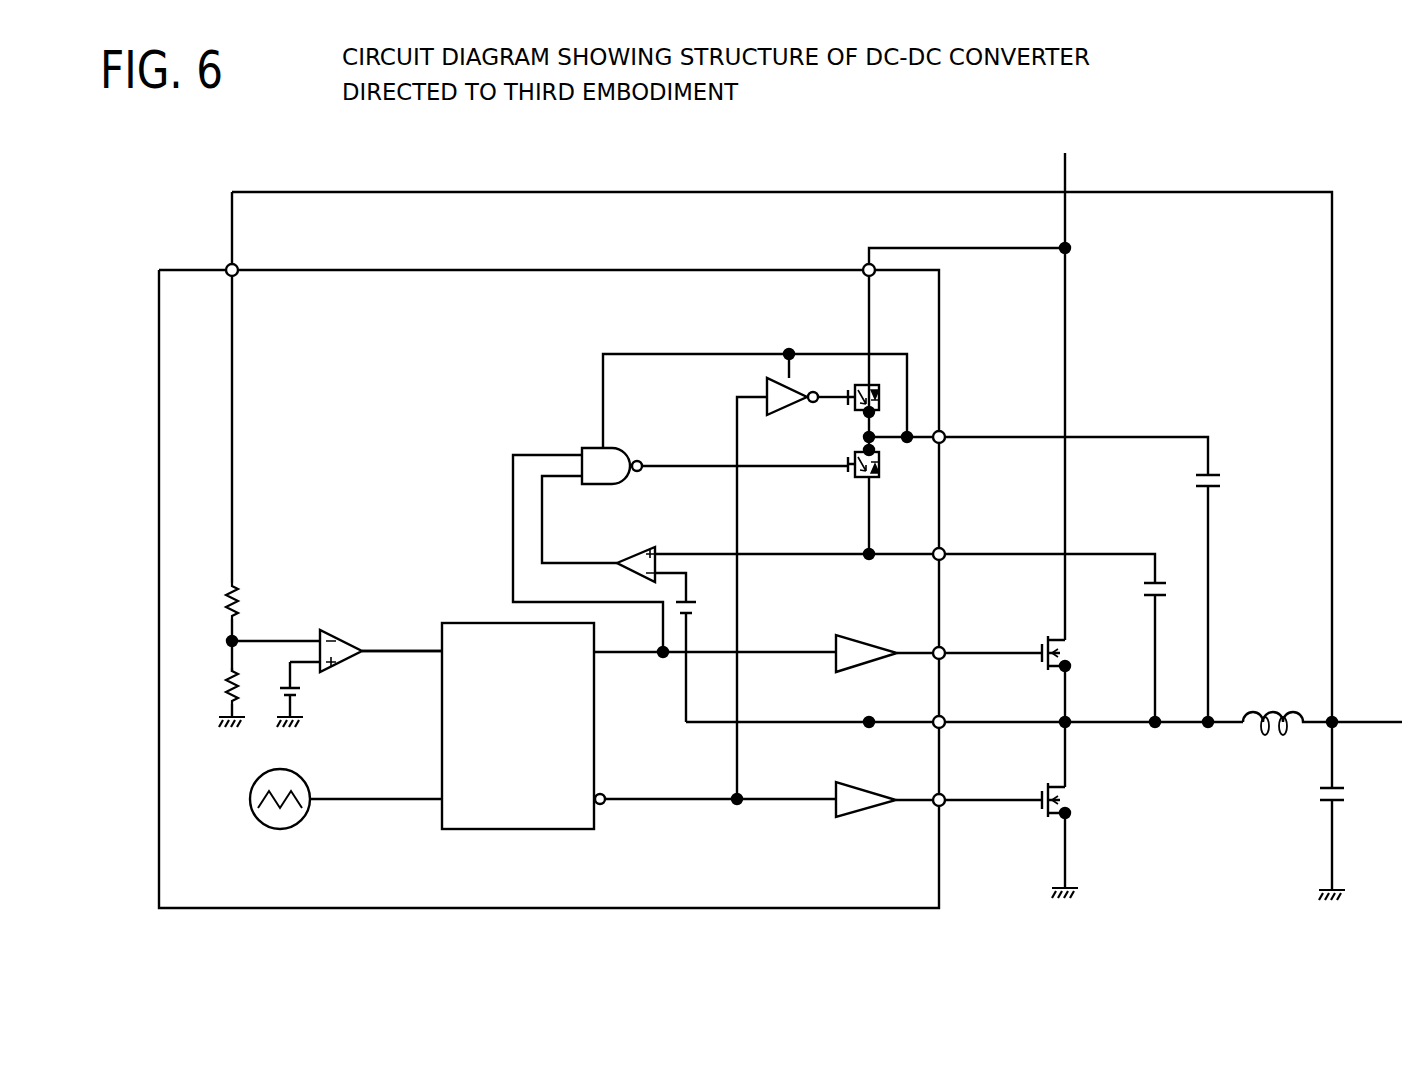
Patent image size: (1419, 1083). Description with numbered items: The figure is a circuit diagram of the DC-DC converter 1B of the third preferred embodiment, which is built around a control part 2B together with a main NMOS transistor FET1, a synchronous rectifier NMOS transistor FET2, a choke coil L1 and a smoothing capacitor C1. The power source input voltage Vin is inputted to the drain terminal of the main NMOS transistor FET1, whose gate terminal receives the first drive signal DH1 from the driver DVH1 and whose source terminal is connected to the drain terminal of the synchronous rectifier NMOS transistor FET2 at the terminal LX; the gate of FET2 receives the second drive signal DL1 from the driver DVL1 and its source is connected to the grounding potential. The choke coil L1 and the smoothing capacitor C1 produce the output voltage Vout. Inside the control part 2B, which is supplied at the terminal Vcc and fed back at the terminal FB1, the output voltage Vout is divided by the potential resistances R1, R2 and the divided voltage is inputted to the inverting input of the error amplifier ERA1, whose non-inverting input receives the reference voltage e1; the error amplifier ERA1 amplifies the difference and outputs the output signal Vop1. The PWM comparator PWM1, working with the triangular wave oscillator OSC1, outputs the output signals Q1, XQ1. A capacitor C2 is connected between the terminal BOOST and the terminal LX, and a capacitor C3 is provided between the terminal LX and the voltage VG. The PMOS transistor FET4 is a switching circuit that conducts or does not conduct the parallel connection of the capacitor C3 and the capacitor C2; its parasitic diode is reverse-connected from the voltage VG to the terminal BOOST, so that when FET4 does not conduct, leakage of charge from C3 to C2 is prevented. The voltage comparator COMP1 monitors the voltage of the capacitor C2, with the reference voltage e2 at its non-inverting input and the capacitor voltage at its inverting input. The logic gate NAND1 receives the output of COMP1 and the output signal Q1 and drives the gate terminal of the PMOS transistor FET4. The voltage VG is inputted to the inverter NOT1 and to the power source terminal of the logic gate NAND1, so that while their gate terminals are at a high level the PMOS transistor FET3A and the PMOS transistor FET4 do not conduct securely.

The DC-DC converter 1B is at (713, 182).
The control part 2B is at (575, 268).
The feedback terminal FB1 is at (211, 387).
The potential resistance R1 is at (212, 627).
The potential resistance R2 is at (215, 697).
The error amplifier ERA1 is at (337, 638).
The output signal Vop1 is at (402, 639).
The reference voltage e1 is at (303, 694).
The PWM comparator PWM1 is at (596, 738).
The triangular wave oscillator OSC1 is at (346, 811).
The output signal Q1 is at (674, 556).
The output signal XQ1 is at (715, 600).
The voltage comparator COMP1 is at (622, 539).
The reference voltage e2 is at (699, 659).
The logic gate NAND1 is at (744, 416).
The inverter NOT1 is at (765, 391).
The power supply terminal Vcc is at (946, 314).
The power source input voltage Vin is at (1065, 176).
The PMOS transistor FET3A is at (855, 420).
The PMOS transistor FET4 is at (855, 478).
The voltage VG is at (1038, 443).
The capacitor C3 is at (1190, 599).
The terminal BOOST is at (905, 555).
The capacitor C2 is at (1137, 655).
The driver DVH1 is at (866, 642).
The first drive signal DH1 is at (987, 642).
The main NMOS transistor FET1 is at (1082, 711).
The terminal LX is at (964, 712).
The driver DVL1 is at (868, 787).
The second drive signal DL1 is at (987, 790).
The synchronous rectifier NMOS transistor FET2 is at (1083, 840).
The choke coil L1 is at (1287, 708).
The output voltage Vout is at (1352, 720).
The smoothing capacitor C1 is at (1348, 811).